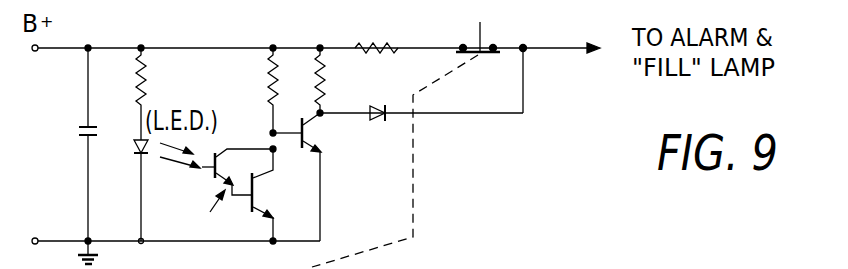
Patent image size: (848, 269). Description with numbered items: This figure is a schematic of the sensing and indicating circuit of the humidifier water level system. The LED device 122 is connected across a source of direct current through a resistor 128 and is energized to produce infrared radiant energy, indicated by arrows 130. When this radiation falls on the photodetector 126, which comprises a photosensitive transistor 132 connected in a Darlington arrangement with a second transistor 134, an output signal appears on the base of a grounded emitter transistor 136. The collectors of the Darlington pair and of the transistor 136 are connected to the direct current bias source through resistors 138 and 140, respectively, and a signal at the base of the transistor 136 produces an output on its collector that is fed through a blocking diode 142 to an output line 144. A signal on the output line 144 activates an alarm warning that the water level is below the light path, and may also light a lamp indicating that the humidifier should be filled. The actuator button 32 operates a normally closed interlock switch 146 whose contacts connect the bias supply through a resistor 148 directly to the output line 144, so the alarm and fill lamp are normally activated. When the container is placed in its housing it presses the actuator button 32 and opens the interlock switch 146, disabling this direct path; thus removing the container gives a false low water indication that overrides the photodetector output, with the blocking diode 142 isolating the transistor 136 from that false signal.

The actuator button 32 is at (414, 197).
The LED device 122 is at (135, 150).
The photodetector 126 is at (221, 214).
The resistor 128 is at (147, 85).
The arrows 130 is at (169, 160).
The photosensitive transistor 132 is at (228, 136).
The second transistor 134 is at (258, 192).
The grounded emitter transistor 136 is at (293, 128).
The resistor 138 is at (267, 71).
The resistor 140 is at (326, 77).
The blocking diode 142 is at (377, 120).
The output line 144 is at (558, 48).
The interlock switch 146 is at (481, 30).
The resistor 148 is at (381, 38).